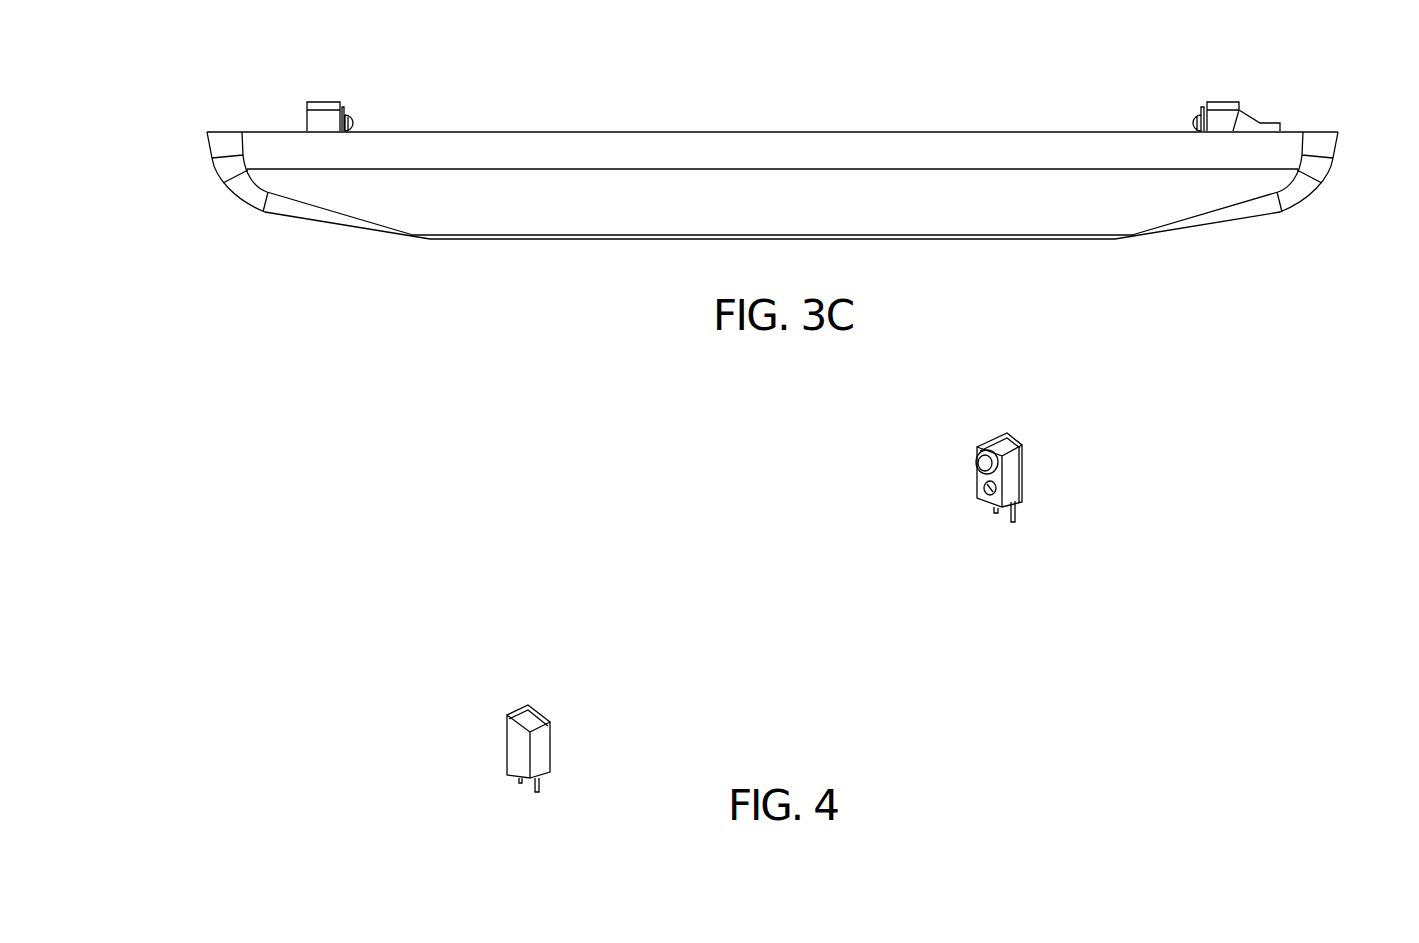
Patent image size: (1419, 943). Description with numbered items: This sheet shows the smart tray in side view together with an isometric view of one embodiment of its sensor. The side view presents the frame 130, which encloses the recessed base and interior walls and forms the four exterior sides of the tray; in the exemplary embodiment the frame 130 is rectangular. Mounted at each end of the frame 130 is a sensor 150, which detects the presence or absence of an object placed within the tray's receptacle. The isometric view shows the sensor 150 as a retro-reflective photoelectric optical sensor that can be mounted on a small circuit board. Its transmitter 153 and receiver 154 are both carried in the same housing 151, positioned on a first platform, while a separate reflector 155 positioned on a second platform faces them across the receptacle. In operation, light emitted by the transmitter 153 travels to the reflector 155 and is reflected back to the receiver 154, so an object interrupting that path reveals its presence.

In FIG. 3C, the frame 130 is at (720, 145).
In FIG. 3C, the sensor 150 is at (322, 106).
In FIG. 4, the housing 151 is at (1022, 472).
In FIG. 4, the transmitter 153 is at (977, 463).
In FIG. 4, the receiver 154 is at (982, 488).
In FIG. 4, the reflector 155 is at (543, 737).